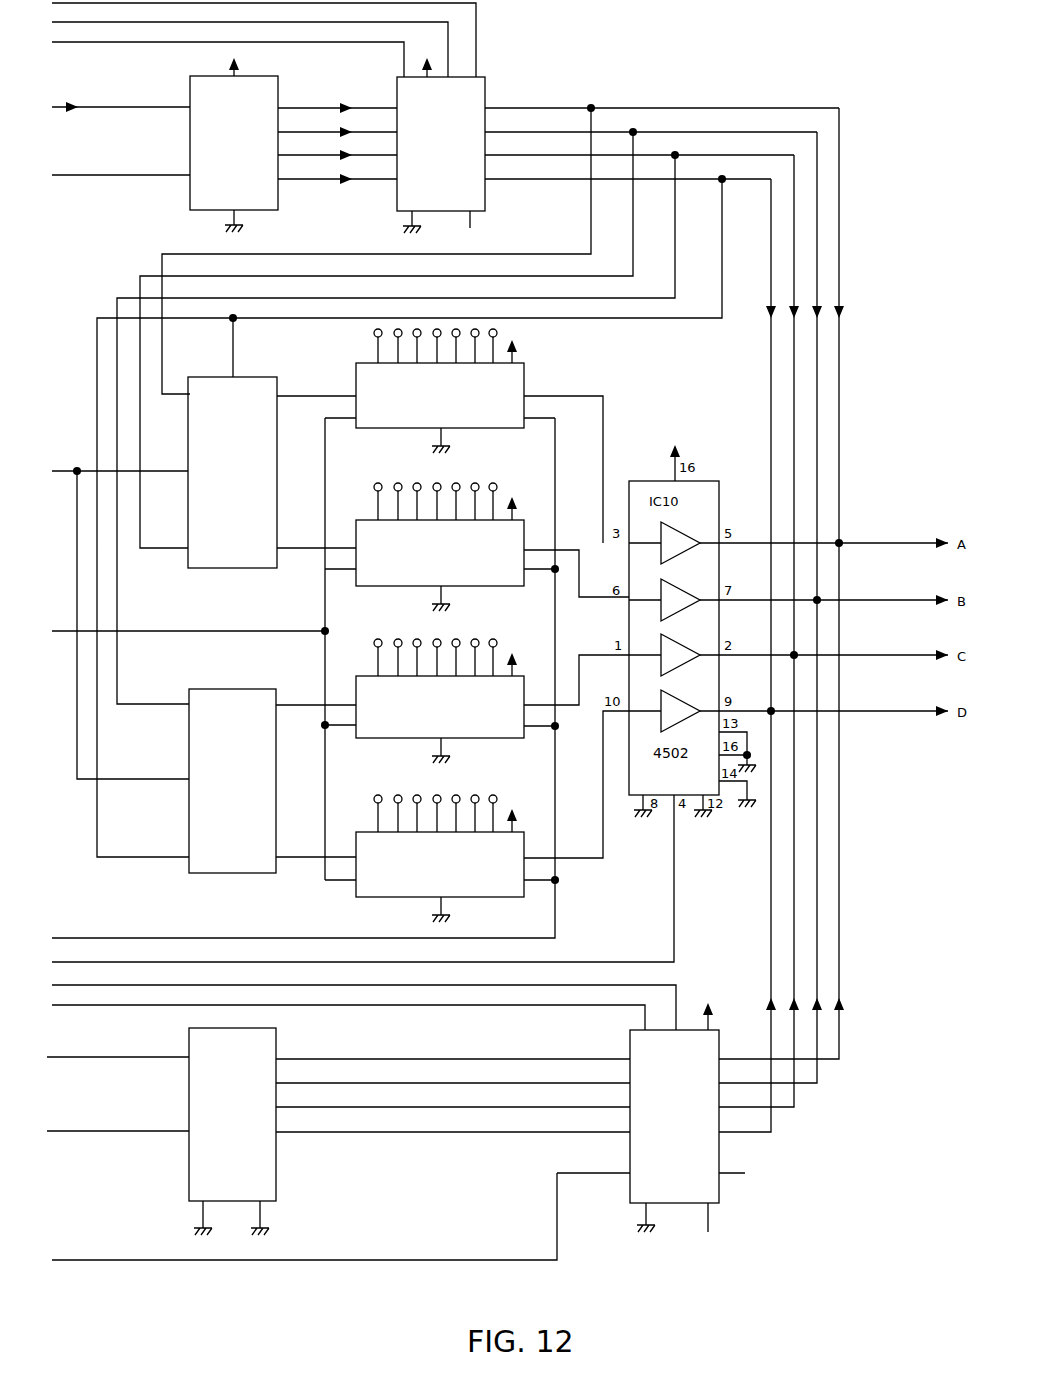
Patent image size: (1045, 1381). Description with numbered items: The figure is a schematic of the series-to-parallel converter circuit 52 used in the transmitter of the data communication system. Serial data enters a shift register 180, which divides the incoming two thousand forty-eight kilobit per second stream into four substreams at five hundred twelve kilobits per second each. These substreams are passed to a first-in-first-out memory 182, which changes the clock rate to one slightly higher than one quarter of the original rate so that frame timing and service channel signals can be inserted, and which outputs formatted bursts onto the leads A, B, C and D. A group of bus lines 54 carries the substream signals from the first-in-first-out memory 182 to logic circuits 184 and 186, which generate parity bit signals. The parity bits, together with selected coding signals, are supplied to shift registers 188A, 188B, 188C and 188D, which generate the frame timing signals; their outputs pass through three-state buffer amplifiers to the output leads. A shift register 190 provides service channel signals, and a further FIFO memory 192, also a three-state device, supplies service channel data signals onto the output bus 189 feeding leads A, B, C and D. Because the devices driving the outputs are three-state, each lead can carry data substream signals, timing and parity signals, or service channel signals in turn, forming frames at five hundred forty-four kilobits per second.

The series-to-parallel converter circuit 52 is at (496, 50).
The address/control bus 54 is at (92, 302).
The shift register 180 is at (188, 198).
The first-in-first-out memory 182 is at (487, 87).
The logic circuit 184 is at (222, 568).
The logic circuit 186 is at (218, 875).
The shift register 188A is at (525, 374).
The shift register 188B is at (391, 587).
The shift register 188C is at (391, 740).
The shift register 188D is at (391, 899).
The output bus 189 is at (818, 211).
The shift register 190 is at (188, 1172).
The FIFO memory 192 is at (720, 1187).